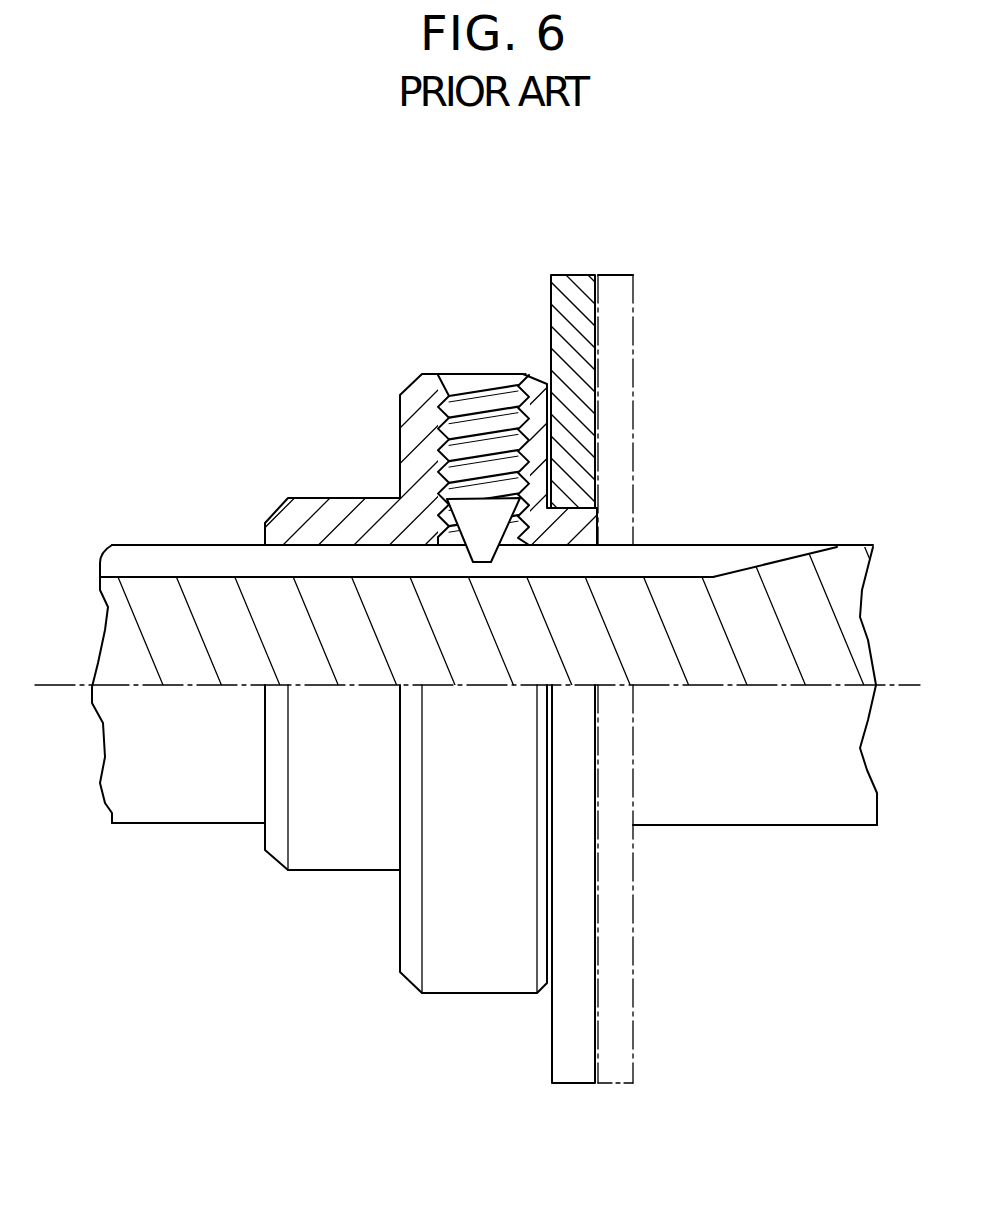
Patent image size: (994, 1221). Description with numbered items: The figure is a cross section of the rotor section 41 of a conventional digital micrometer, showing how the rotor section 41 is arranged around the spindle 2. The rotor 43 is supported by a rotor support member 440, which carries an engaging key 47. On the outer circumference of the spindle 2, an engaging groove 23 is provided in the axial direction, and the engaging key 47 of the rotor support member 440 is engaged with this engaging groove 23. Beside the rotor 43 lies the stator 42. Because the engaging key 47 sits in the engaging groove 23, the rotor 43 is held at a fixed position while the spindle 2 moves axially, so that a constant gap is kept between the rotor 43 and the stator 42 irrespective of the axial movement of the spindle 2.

The spindle 2 is at (810, 793).
The engaging groove 23 is at (727, 557).
The rotor section 41 is at (372, 199).
The rotor support member 440 is at (337, 508).
The engaging key 47 is at (483, 380).
The rotor 43 is at (570, 275).
The stator 42 is at (612, 273).